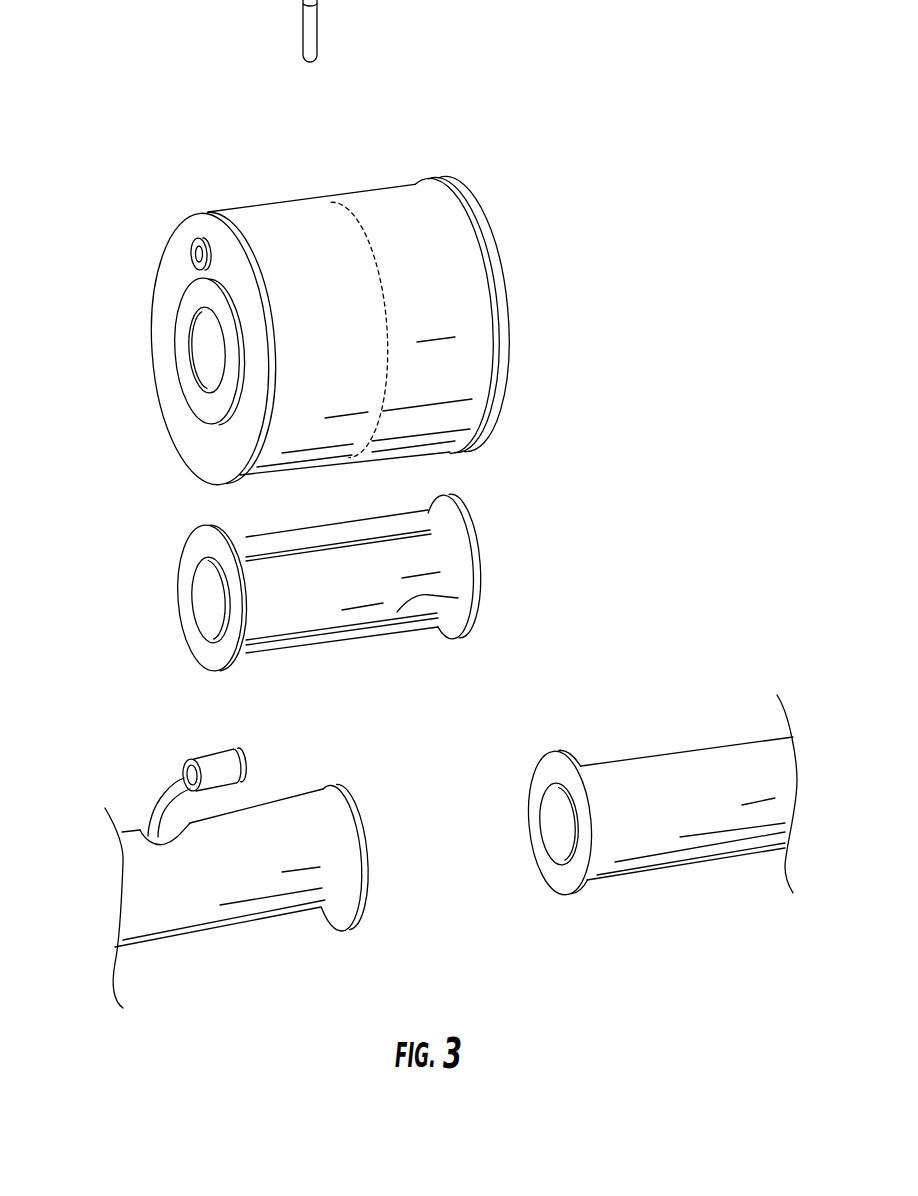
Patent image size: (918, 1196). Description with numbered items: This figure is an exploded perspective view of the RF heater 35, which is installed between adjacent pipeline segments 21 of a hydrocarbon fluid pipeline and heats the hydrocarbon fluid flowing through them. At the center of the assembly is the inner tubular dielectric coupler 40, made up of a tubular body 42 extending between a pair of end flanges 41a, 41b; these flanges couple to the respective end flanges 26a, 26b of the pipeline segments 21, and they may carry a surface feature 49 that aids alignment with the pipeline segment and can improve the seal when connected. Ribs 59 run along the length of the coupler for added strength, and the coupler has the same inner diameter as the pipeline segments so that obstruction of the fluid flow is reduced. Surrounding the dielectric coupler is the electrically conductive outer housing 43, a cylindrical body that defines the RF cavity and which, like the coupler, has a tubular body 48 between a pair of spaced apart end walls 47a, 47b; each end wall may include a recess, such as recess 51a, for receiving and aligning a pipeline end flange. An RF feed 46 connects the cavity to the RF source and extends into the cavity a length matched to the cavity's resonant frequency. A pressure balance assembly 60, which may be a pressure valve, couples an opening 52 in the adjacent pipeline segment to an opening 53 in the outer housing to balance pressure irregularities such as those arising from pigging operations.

The pipeline segments 21 is at (441, 869).
The end flange 26a is at (303, 902).
The end flange 26b is at (553, 883).
The RF heater 35 is at (328, 288).
The inner tubular dielectric coupler 40 is at (324, 614).
The end flange 41a is at (190, 550).
The end flange 41b is at (455, 510).
The tubular body 42 is at (288, 612).
The electrically conductive outer housing 43 is at (328, 290).
The RF feed 46 is at (311, 34).
The end wall 47a is at (168, 277).
The end wall 47b is at (500, 263).
The tubular body 48 is at (472, 399).
The surface feature 49 is at (198, 632).
The recess 51a is at (160, 331).
The opening 52 is at (200, 800).
The opening 53 is at (193, 236).
The ribs 59 is at (458, 598).
The pressure balance assembly 60 is at (185, 758).